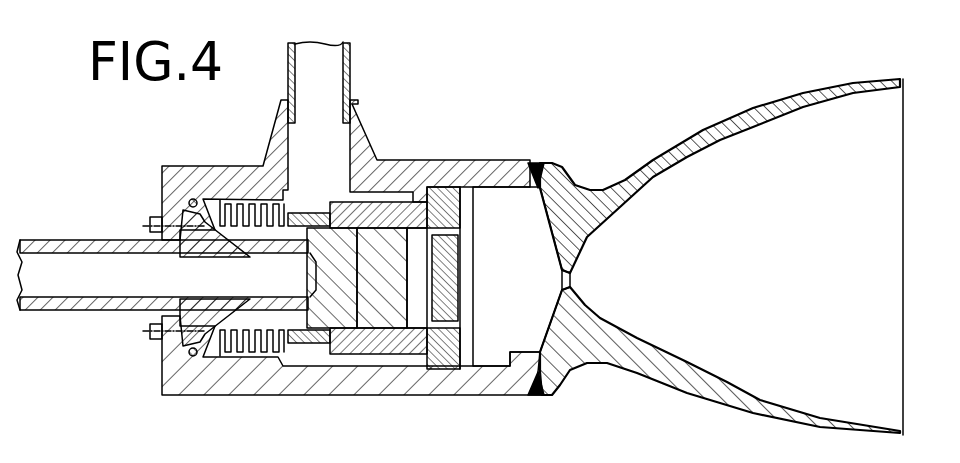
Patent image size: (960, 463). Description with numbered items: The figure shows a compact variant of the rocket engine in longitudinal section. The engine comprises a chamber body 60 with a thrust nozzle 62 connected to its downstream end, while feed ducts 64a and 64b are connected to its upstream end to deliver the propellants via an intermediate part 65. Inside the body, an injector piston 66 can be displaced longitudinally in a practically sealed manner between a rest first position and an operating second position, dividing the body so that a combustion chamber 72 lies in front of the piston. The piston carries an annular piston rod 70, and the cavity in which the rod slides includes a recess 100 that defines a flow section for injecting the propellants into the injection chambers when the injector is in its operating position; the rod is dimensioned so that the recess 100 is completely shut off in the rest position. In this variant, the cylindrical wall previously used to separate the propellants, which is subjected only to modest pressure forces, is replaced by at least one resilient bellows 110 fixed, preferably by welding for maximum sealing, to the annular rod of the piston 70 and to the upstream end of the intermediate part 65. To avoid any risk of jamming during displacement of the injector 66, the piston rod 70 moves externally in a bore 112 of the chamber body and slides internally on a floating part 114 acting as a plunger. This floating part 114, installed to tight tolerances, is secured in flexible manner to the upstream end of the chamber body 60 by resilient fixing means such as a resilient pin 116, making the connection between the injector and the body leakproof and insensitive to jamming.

The chamber body 60 is at (500, 173).
The thrust nozzle 62 is at (653, 170).
The feed duct 64a is at (350, 73).
The feed duct 64b is at (72, 247).
The intermediate part 65 is at (173, 333).
The piston 66 is at (451, 270).
The annular piston rod 70 is at (407, 217).
The combustion chamber 72 is at (535, 303).
The recess 100 is at (388, 194).
The resilient bellows 110 is at (213, 200).
The bore 112 is at (412, 362).
The floating part 114 is at (358, 318).
The resilient pin 116 is at (380, 307).